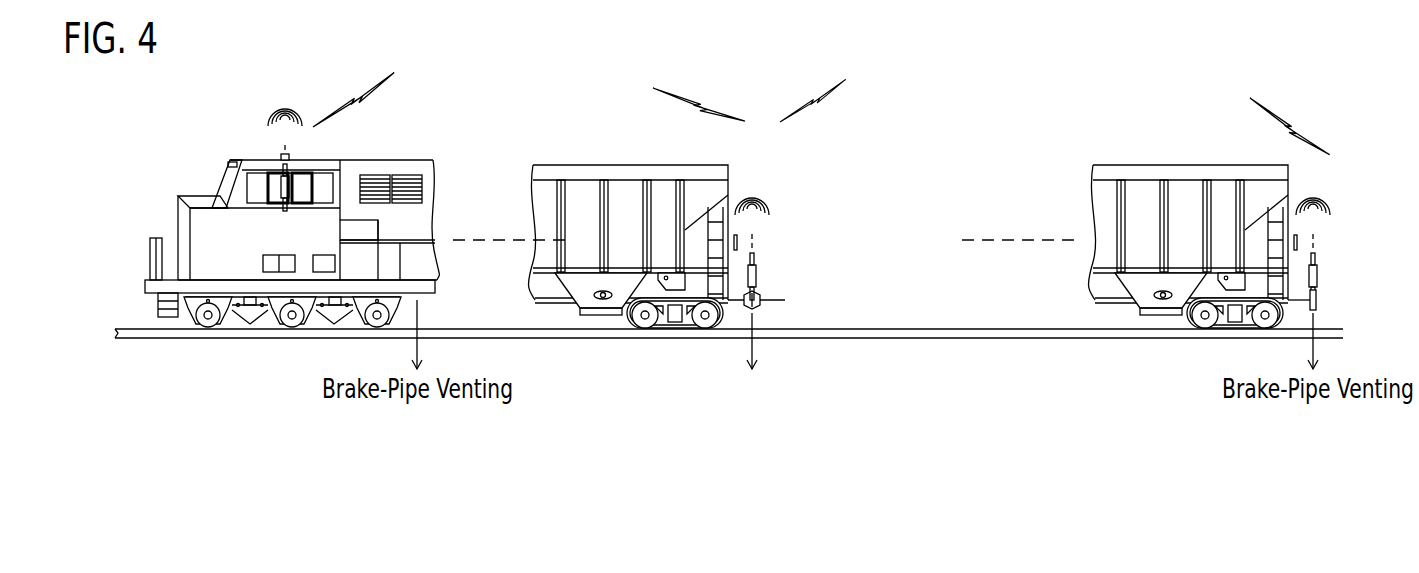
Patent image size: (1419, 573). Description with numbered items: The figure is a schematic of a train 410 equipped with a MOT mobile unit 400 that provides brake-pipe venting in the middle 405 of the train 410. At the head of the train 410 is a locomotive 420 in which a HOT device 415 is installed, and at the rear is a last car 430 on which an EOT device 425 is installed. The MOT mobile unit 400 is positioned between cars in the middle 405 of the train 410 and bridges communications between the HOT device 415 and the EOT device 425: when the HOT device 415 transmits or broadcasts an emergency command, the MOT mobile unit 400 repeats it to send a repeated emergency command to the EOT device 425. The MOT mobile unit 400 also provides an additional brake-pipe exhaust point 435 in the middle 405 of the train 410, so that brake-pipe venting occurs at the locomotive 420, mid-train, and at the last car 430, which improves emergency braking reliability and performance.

The MOT mobile unit 400 is at (752, 192).
The middle of the train 405 is at (759, 408).
The train 410 is at (249, 193).
The HOT device 415 is at (287, 124).
The locomotive 420 is at (387, 160).
The EOT device 425 is at (1328, 269).
The last car 430 is at (1147, 162).
The brake-pipe exhaust point 435 is at (760, 350).